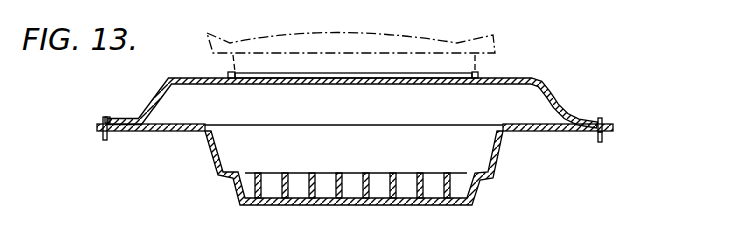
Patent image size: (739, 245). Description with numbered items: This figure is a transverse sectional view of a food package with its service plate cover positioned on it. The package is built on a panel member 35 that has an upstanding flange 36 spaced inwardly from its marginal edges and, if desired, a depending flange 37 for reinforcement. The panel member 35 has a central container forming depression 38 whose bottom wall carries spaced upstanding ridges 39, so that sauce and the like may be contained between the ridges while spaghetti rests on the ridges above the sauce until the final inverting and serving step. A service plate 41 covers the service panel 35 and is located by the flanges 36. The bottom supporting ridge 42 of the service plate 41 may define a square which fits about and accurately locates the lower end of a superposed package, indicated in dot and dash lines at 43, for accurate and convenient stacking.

The panel member 35 is at (530, 124).
The upstanding flange 36 is at (603, 122).
The depending flange 37 is at (605, 139).
The container forming depression 38 is at (498, 149).
The upstanding ridges 39 is at (392, 172).
The service plate 41 is at (532, 77).
The bottom supporting ridge 42 is at (421, 77).
The superposed package 43 is at (287, 34).